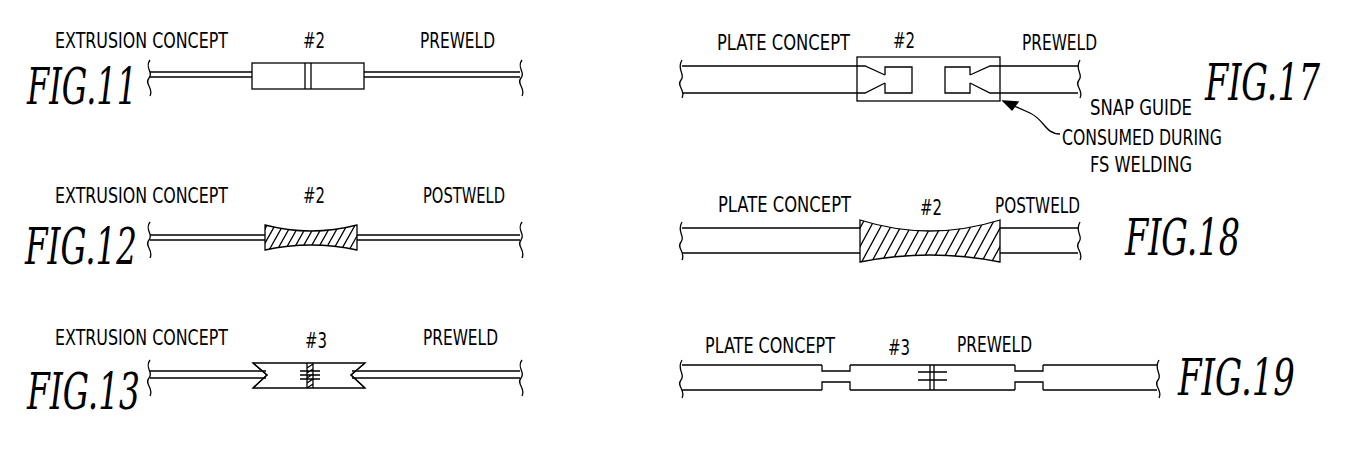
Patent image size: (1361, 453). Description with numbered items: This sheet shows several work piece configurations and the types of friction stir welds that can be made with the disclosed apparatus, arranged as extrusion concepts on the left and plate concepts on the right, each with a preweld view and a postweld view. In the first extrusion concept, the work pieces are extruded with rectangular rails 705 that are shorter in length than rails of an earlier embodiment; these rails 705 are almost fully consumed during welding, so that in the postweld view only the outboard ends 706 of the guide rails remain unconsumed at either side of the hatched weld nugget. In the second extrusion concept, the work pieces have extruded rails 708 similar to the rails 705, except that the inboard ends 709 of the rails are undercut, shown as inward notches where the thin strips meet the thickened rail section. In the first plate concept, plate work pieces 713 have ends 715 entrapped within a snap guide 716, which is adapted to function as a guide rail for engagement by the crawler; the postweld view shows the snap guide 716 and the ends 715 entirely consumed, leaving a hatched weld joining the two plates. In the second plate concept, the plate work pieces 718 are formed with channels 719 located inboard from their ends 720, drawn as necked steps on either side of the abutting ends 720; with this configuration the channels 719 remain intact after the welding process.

In FIG. 11, the extruded rails 705 is at (291, 90).
In FIG. 12, the outboard ends 706 is at (264, 249).
In FIG. 13, the rails 708 is at (275, 363).
In FIG. 13, the inboard ends 709 is at (365, 372).
In FIG. 17, the work pieces 713 is at (823, 91).
In FIG. 17, the ends 715 is at (895, 87).
In FIG. 17, the snap guide 716 is at (932, 57).
In FIG. 19, the work pieces 718 is at (740, 389).
In FIG. 19, the channels 719 is at (832, 383).
In FIG. 19, the ends 720 is at (928, 386).